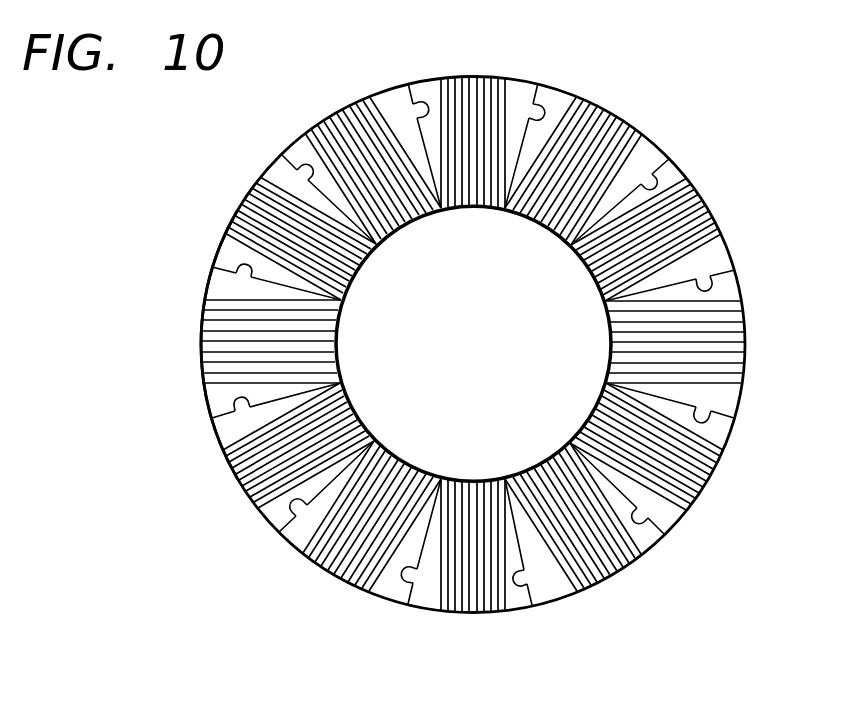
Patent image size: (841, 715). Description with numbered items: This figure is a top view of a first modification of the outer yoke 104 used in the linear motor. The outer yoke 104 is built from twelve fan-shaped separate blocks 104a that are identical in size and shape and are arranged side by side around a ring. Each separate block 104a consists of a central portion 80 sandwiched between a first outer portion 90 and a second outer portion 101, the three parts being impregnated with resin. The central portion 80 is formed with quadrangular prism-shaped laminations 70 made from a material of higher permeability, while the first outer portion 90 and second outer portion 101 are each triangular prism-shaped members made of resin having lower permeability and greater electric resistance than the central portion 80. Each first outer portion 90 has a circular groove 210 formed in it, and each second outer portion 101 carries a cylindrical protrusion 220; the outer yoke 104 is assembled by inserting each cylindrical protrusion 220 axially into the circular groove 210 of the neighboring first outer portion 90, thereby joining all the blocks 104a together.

The outer yoke 104 is at (466, 387).
The fan-shaped separate block 104a is at (239, 209).
The cylindrical protrusion 220 is at (404, 575).
The circular groove 210 is at (528, 579).
The first outer portion 90 is at (393, 598).
The second outer portion 101 is at (422, 594).
The central portion 80 is at (470, 593).
The lamination 70 is at (487, 601).